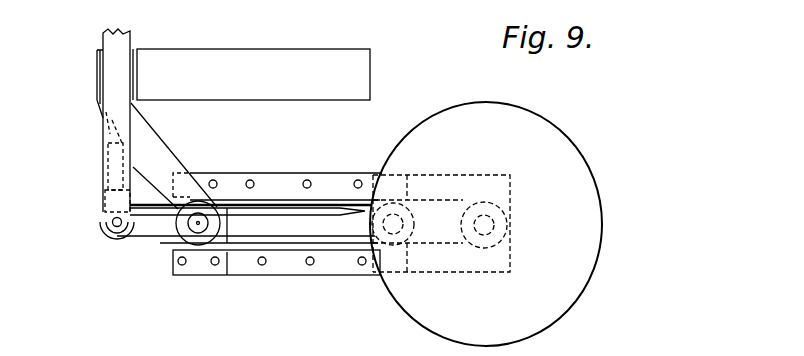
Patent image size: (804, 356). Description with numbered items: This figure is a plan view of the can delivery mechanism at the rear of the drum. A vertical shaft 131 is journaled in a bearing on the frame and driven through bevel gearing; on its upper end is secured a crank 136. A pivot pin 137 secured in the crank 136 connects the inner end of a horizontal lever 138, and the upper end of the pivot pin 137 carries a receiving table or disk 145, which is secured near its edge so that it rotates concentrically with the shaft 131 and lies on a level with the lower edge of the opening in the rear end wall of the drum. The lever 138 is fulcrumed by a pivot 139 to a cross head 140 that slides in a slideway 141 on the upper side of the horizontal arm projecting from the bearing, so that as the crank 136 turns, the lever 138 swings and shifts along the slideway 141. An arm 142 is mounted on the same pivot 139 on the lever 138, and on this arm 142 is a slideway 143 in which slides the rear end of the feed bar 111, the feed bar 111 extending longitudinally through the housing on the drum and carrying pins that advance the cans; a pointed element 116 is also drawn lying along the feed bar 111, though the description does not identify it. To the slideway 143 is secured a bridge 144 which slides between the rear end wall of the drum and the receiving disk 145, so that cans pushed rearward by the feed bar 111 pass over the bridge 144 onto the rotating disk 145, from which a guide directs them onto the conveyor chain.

The feed bar 111 is at (117, 53).
The slideway 143 is at (102, 87).
The bridge 144 is at (251, 74).
The arm 142 is at (163, 170).
The horizontal lever 138 is at (282, 228).
The blade 116 is at (323, 212).
The slideway 141 is at (340, 248).
The cross head 140 is at (227, 245).
The pivot 139 is at (197, 235).
The receiving table or disk 145 is at (575, 257).
The crank 136 is at (445, 230).
The pivot pin 137 is at (398, 220).
The vertical shaft 131 is at (490, 224).